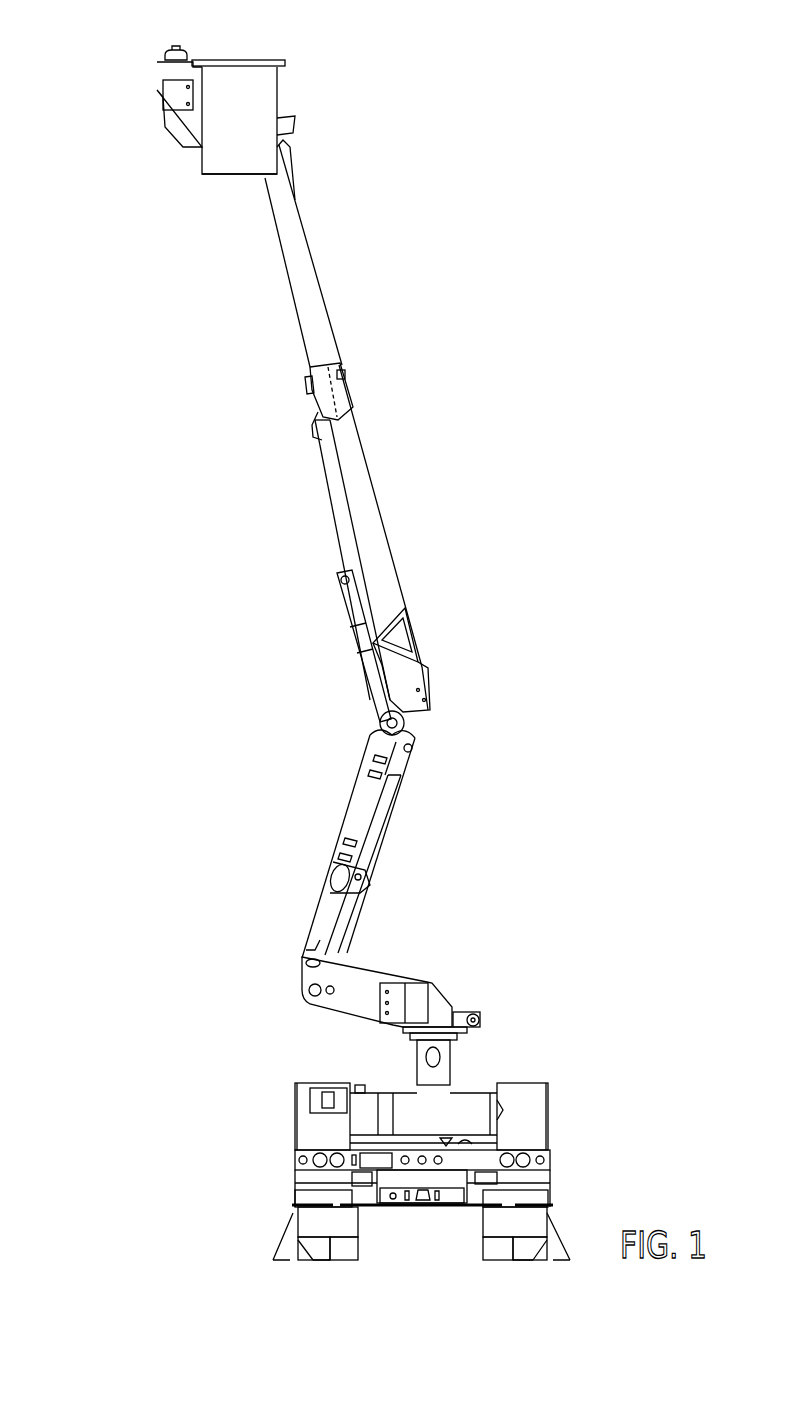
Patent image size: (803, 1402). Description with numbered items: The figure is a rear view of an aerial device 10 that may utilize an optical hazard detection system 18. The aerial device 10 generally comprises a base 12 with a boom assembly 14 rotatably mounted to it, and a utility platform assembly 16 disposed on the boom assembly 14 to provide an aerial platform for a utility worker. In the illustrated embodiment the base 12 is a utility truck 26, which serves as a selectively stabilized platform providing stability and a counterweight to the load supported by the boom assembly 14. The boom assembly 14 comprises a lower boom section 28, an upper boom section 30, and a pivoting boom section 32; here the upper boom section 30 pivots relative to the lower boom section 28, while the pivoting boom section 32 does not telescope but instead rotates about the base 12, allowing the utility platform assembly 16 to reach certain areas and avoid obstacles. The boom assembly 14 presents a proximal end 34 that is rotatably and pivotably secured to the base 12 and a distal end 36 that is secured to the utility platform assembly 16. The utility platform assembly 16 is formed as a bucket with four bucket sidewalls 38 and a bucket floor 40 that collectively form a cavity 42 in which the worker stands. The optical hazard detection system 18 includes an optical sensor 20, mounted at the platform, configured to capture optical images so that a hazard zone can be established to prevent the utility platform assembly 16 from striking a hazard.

The aerial device 10 is at (520, 232).
The base 12 is at (284, 1111).
The boom assembly 14 is at (205, 484).
The utility platform assembly 16 is at (278, 56).
The optical hazard detection system 18 is at (150, 44).
The optical sensor 20 is at (181, 50).
The utility truck 26 is at (505, 1083).
The lower boom section 28 is at (385, 518).
The upper boom section 30 is at (320, 278).
The pivoting boom section 32 is at (340, 808).
The proximal end 34 is at (248, 871).
The distal end 36 is at (220, 237).
The bucket sidewall 38 is at (284, 90).
The bucket floor 40 is at (215, 178).
The cavity 42 is at (234, 60).